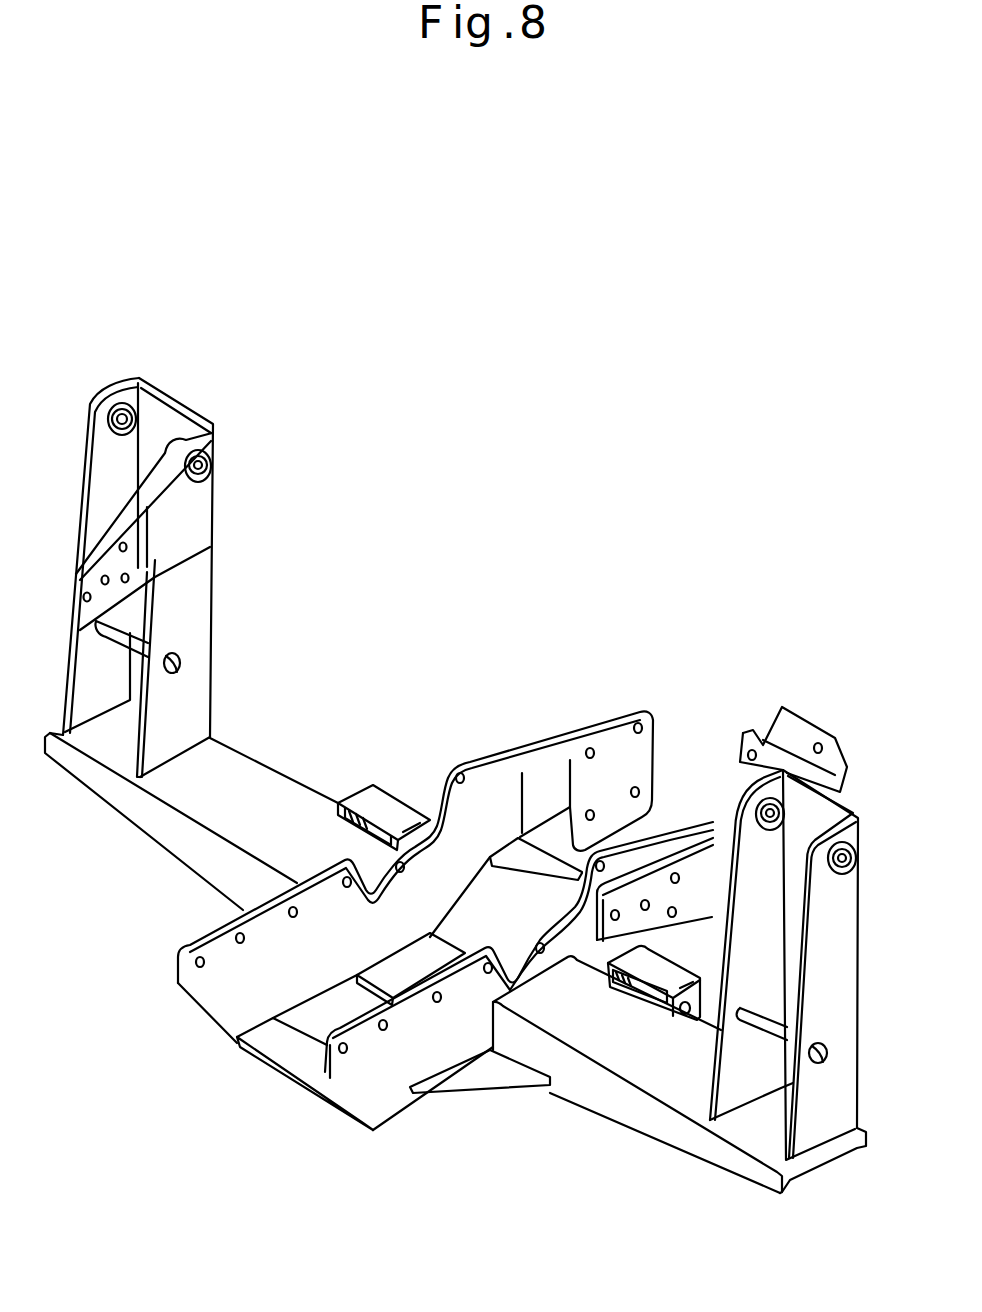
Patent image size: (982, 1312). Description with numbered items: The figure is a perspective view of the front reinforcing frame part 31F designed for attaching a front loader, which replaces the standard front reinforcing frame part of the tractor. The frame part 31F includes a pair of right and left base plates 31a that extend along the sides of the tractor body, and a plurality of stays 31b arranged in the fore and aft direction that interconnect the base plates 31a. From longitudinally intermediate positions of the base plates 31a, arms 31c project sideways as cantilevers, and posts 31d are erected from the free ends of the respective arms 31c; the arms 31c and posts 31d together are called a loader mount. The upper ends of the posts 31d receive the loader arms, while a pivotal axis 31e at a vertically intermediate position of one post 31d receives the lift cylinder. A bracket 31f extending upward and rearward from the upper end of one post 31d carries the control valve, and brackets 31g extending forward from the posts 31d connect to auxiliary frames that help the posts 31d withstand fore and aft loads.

The front reinforcing frame part 31F is at (177, 1140).
The base plate 31a is at (217, 933).
The stay 31b is at (548, 863).
The arm 31c is at (130, 808).
The post 31d is at (178, 393).
The pivotal axis 31e is at (120, 637).
The bracket 31f is at (773, 723).
The bracket 31g is at (110, 593).